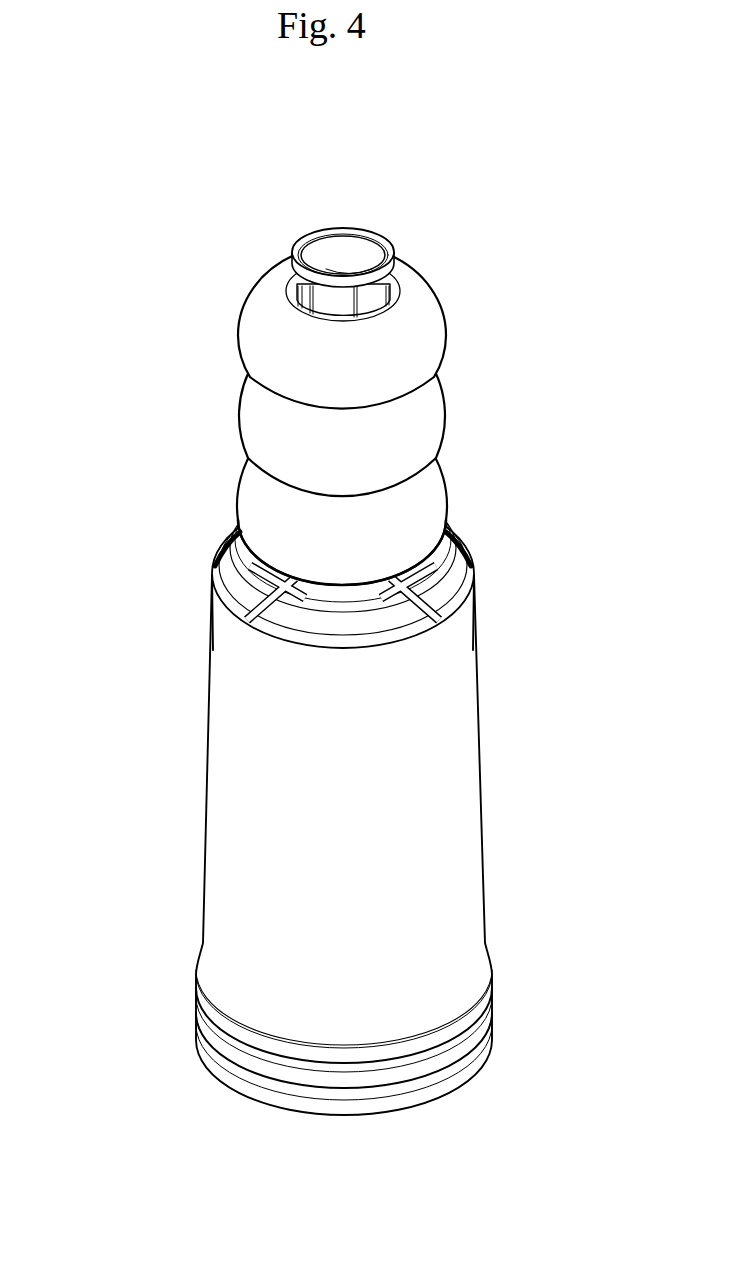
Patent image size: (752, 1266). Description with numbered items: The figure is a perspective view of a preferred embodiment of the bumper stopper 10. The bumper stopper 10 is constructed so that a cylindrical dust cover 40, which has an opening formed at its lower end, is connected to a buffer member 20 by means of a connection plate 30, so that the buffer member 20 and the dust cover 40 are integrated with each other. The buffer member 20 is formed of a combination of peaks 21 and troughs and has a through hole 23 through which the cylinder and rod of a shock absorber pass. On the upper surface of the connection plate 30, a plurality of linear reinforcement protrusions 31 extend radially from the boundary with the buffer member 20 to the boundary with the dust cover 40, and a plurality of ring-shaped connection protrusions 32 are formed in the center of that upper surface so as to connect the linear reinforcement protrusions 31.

The bumper stopper 10 is at (321, 611).
The buffer member 20 is at (347, 415).
The peaks 21 is at (249, 323).
The through hole 23 is at (364, 253).
The connection plate 30 is at (355, 604).
The linear reinforcement protrusions 31 is at (216, 606).
The ring-shaped connection protrusions 32 is at (224, 552).
The dust cover 40 is at (185, 850).